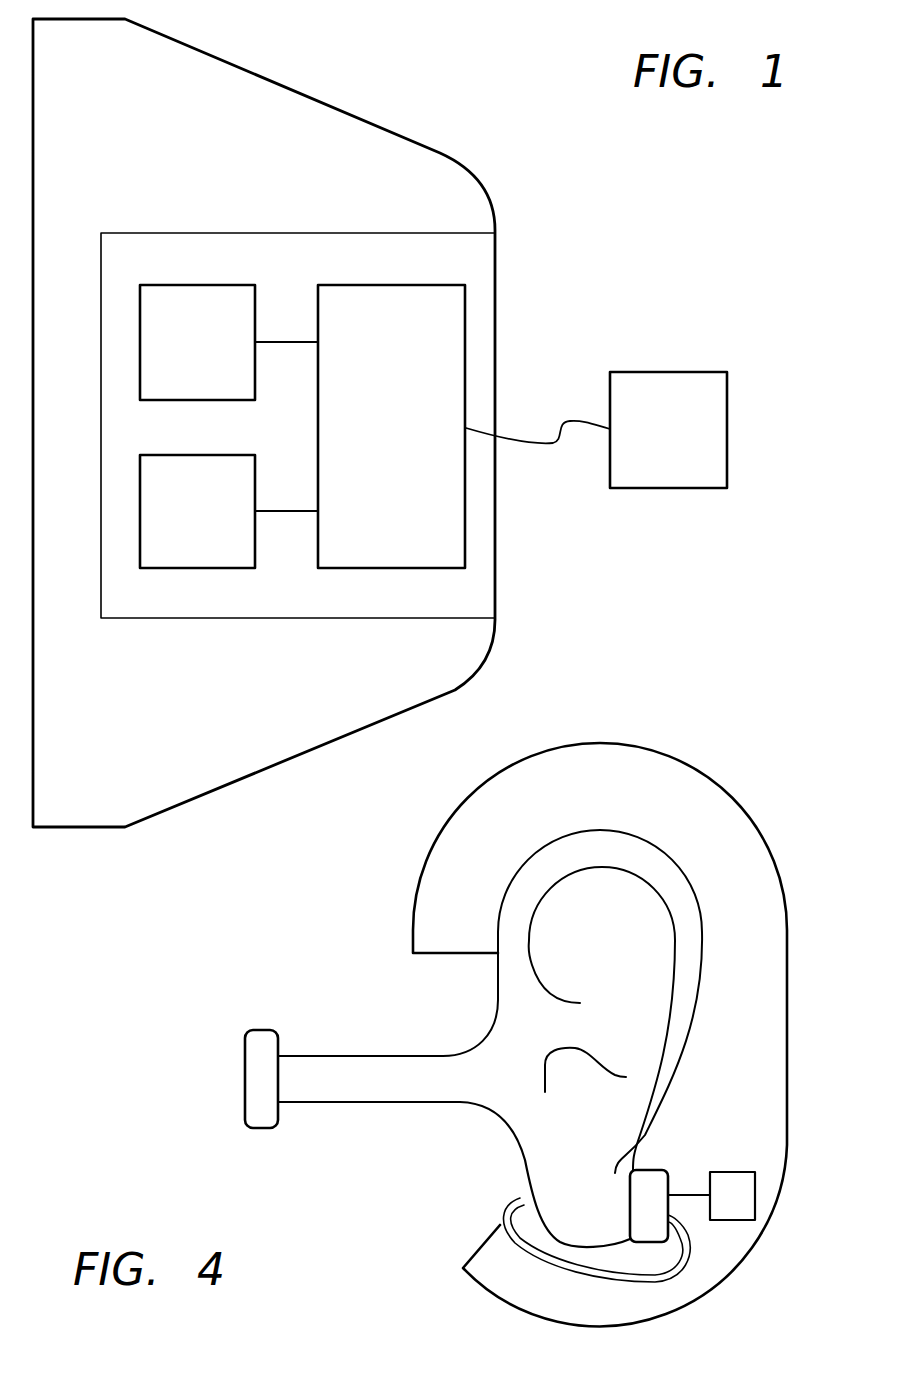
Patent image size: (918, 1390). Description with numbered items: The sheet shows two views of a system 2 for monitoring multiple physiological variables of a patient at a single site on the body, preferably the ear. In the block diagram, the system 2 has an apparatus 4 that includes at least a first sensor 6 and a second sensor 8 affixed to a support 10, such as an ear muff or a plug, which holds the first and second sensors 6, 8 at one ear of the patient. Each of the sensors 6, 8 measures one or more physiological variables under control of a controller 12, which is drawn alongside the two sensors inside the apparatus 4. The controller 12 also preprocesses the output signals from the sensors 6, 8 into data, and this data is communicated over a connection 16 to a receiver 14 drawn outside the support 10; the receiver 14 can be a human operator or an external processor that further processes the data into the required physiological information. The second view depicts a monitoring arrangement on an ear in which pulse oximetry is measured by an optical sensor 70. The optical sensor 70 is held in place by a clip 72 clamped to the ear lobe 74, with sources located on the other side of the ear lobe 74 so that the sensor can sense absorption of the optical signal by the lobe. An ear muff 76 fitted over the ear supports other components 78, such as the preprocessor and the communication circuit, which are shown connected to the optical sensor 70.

In FIG. 1, the system 2 is at (534, 247).
In FIG. 1, the apparatus 4 is at (154, 232).
In FIG. 1, the first sensor 6 is at (196, 284).
In FIG. 1, the second sensor 8 is at (197, 455).
In FIG. 1, the support 10 is at (328, 100).
In FIG. 1, the controller 12 is at (373, 284).
In FIG. 1, the receiver 14 is at (640, 372).
In FIG. 1, the connection line 16 is at (515, 433).
In FIG. 4, the optical sensor 70 is at (656, 1180).
In FIG. 4, the clip 72 is at (593, 1280).
In FIG. 4, the ear lobe 74 is at (555, 1185).
In FIG. 4, the ear muff 76 is at (412, 918).
In FIG. 4, the other components 78 is at (732, 1172).